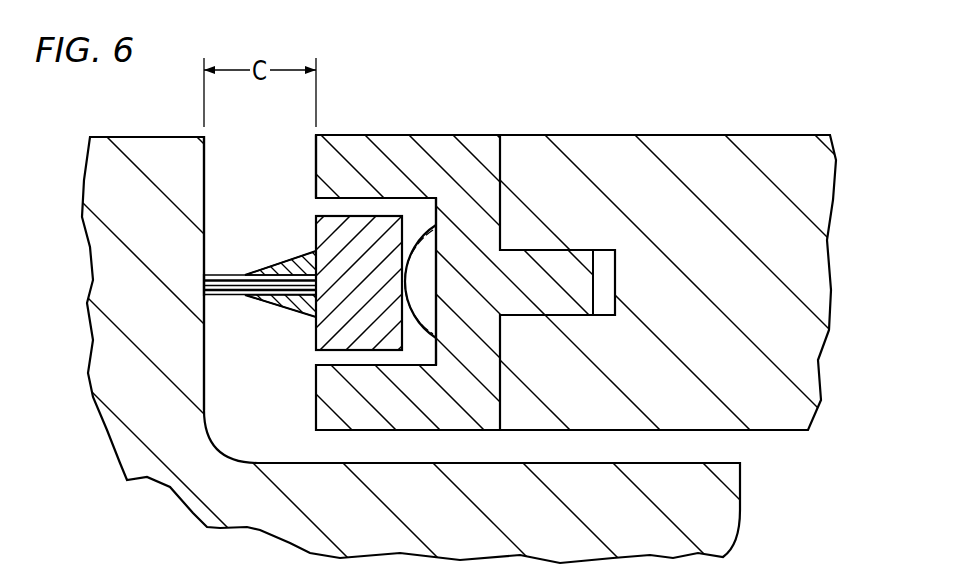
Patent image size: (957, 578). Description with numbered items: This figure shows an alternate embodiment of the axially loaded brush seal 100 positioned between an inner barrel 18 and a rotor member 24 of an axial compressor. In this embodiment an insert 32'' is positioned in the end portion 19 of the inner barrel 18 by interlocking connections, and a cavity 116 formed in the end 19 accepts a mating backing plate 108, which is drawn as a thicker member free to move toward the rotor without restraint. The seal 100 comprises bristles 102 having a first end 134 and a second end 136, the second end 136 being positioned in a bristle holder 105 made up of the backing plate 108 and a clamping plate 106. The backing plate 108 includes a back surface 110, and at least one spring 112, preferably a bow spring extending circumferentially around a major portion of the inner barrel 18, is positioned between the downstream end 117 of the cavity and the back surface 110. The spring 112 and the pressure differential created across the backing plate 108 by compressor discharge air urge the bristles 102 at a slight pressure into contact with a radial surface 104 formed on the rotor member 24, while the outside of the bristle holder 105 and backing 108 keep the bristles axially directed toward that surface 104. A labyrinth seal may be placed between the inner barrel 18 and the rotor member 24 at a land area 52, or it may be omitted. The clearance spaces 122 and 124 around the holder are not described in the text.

The inner barrel 18 is at (748, 133).
The rotor member 24 is at (742, 480).
The land area 52 is at (586, 463).
The insert 32'' is at (478, 289).
The end portion 19 is at (308, 148).
The clearance gap above block 122 is at (353, 198).
The cavity 116 is at (378, 197).
The back surface 110 is at (436, 199).
The downstream end 117 is at (441, 276).
The spring 112 is at (412, 345).
The backing plate 108 is at (376, 352).
The second end 136 is at (320, 280).
The clearance gap below block 124 is at (315, 355).
The axially loaded seal 100 is at (290, 249).
The bristle holder 105 is at (275, 265).
The clamping plate 106 is at (305, 318).
The bristles 102 is at (213, 270).
The first end 134 is at (197, 287).
The radial surface 104 is at (205, 353).